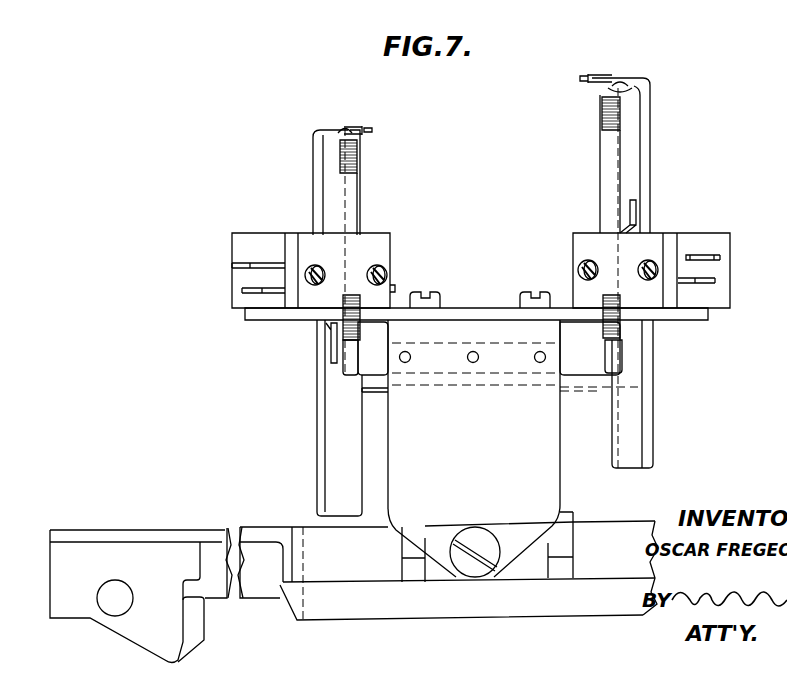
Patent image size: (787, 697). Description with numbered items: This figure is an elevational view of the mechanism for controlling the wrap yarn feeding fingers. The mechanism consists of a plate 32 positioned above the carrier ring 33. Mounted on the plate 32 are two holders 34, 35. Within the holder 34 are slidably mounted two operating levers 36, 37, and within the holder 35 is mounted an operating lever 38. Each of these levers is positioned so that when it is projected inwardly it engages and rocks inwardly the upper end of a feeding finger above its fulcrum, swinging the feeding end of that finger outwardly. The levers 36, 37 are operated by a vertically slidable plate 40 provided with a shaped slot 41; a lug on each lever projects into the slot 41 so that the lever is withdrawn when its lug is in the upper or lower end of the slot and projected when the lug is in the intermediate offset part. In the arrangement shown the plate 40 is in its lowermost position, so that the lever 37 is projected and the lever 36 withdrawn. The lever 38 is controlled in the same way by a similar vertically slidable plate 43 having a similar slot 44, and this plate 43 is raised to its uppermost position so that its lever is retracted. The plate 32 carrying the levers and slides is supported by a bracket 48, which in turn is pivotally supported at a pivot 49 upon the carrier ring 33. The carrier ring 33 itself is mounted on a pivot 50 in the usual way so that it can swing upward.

The plate 32 is at (497, 308).
The carrier ring 33 is at (620, 520).
The holder 34 is at (238, 246).
The holder 35 is at (720, 241).
The operating lever 36 is at (232, 265).
The operating lever 37 is at (242, 291).
The operating lever 38 is at (722, 258).
The vertically slidable plate 40 is at (313, 192).
The slot 41 is at (331, 358).
The vertically slidable plate 43 is at (640, 168).
The slot 44 is at (636, 207).
The bracket 48 is at (490, 448).
The pivot 49 is at (482, 545).
The pivot 50 is at (118, 598).